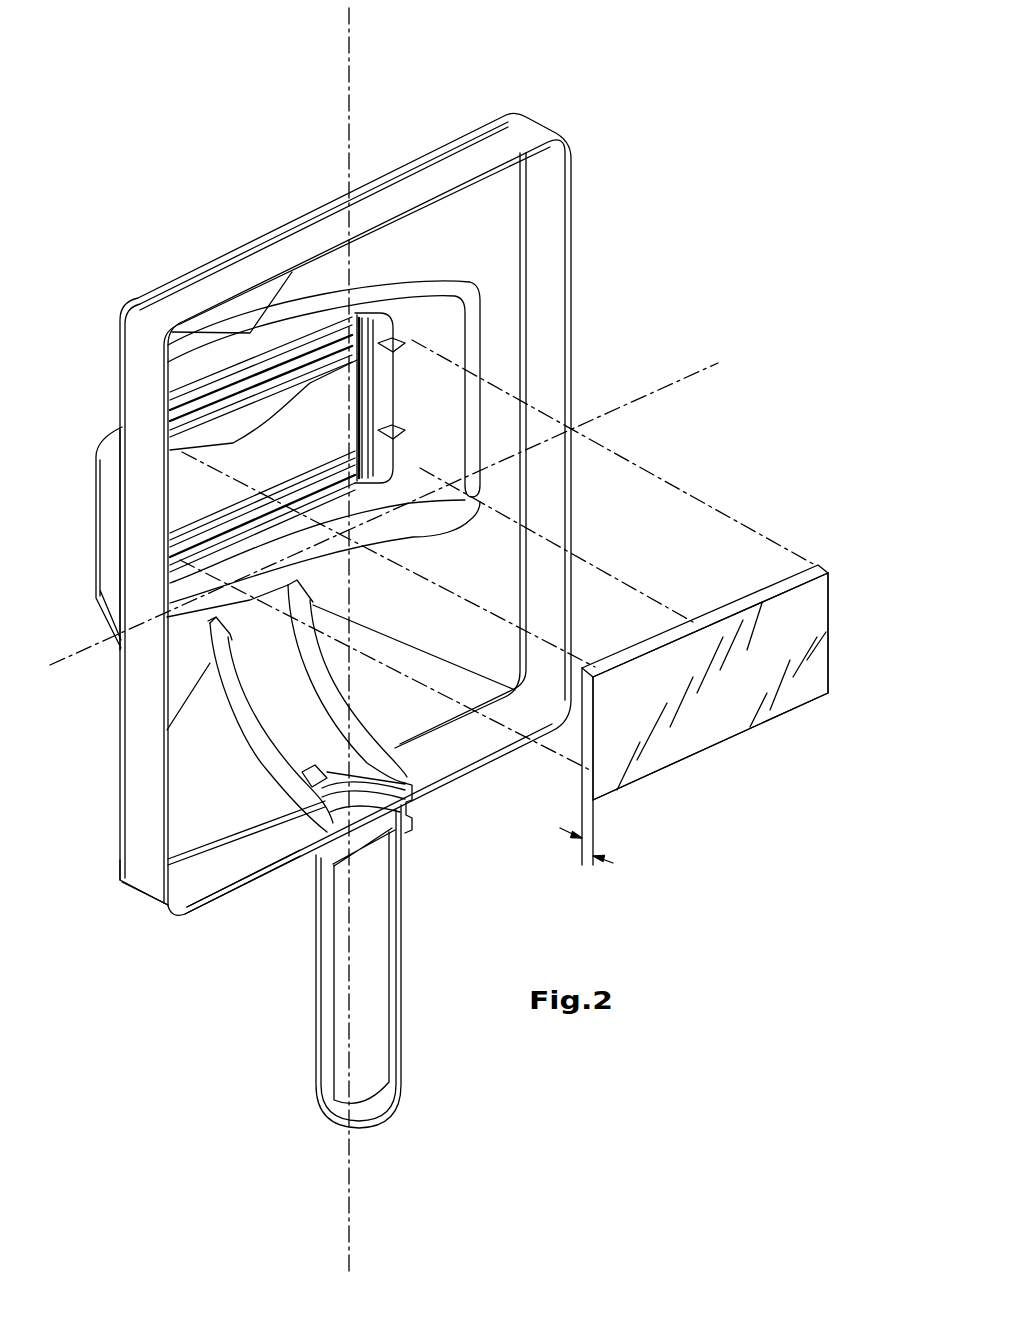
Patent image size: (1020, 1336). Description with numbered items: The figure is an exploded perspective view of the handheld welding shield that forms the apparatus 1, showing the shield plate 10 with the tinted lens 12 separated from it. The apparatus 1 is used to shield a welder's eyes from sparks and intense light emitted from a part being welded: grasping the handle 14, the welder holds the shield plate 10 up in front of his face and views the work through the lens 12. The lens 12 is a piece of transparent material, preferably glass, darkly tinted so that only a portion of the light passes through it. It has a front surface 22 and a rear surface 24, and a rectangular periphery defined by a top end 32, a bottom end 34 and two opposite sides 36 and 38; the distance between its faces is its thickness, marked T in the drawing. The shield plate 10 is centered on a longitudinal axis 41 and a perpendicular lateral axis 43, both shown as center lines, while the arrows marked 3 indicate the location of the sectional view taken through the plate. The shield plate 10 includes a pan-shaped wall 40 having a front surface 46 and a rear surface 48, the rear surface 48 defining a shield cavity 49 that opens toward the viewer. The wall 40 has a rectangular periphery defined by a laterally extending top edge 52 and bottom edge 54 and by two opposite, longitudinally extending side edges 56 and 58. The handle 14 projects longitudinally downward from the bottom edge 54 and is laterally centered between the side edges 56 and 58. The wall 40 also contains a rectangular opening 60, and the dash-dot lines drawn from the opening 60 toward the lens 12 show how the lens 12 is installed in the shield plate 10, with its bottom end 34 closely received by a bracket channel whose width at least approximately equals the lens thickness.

The apparatus 1 is at (235, 110).
The section line 3 is at (348, 72).
The shield plate 10 is at (633, 140).
The tinted lens 12 is at (698, 642).
The handle 14 is at (420, 958).
The front surface of lens 22 is at (770, 580).
The rear surface of lens 24 is at (790, 610).
The top end of lens 32 is at (712, 614).
The bottom end of lens 34 is at (687, 760).
The side of lens 36 is at (587, 763).
The side of lens 38 is at (830, 628).
The wall 40 is at (115, 765).
The longitudinal axis 41 is at (350, 1250).
The lateral axis 43 is at (75, 652).
The front surface of wall 46 is at (122, 797).
The rear surface of wall 48 is at (167, 890).
The shield cavity 49 is at (225, 822).
The top edge 52 is at (442, 190).
The bottom edge 54 is at (443, 772).
The side edge 56 is at (158, 688).
The side edge 58 is at (571, 494).
The rectangular opening 60 is at (262, 466).